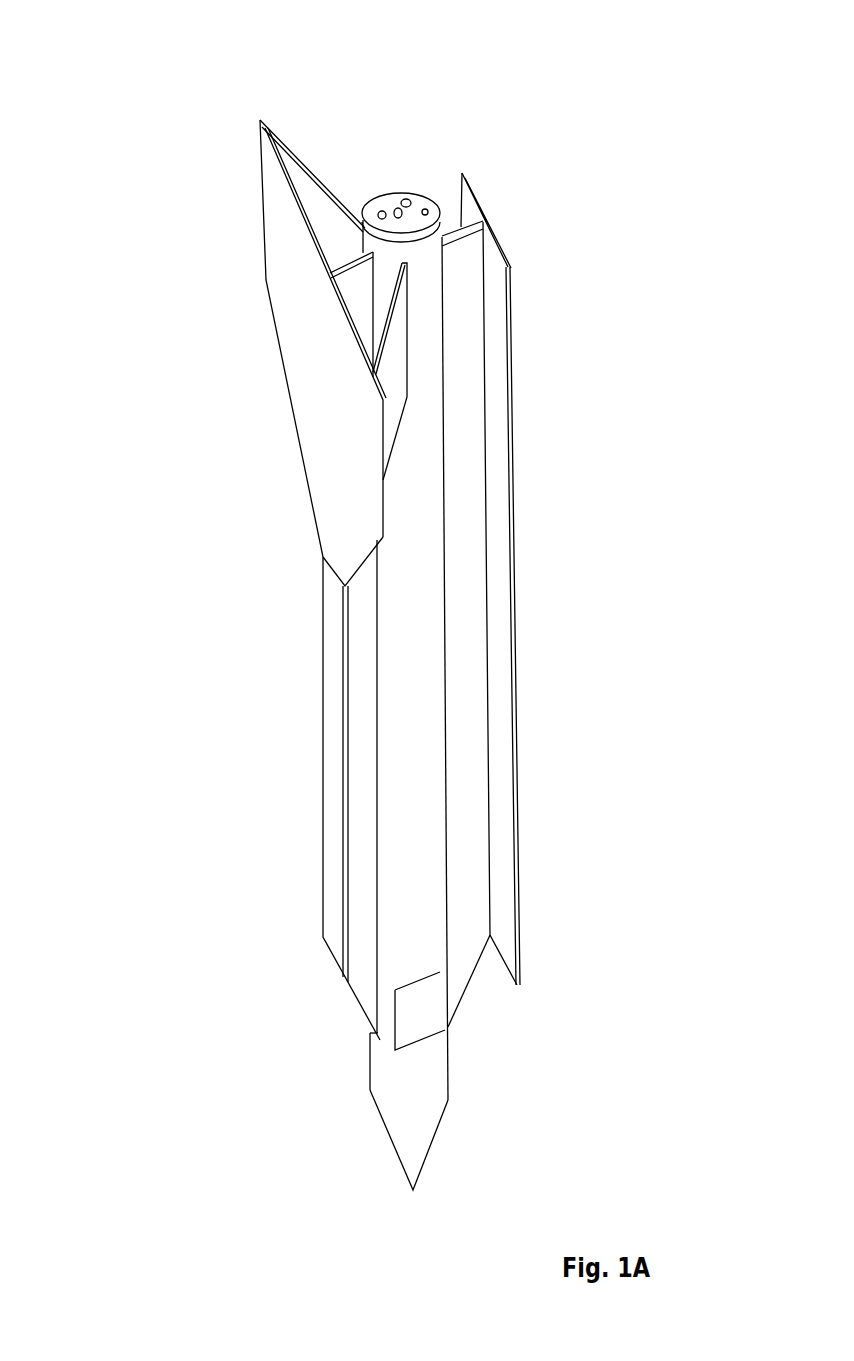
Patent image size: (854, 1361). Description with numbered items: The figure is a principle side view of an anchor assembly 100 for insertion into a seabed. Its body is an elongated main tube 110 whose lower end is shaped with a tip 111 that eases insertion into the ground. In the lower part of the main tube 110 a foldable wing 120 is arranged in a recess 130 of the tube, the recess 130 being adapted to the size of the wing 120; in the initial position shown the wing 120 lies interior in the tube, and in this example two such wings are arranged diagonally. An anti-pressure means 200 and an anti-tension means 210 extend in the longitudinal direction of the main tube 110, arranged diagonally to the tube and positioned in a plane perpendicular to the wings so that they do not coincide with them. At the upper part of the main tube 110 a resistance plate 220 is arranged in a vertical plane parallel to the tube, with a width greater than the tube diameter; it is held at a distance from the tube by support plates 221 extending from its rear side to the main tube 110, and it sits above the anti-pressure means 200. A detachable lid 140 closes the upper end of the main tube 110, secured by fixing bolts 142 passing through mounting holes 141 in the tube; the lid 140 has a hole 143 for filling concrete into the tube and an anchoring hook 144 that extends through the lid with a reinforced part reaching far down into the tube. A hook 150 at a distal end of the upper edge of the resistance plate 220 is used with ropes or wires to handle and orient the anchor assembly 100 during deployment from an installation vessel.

The anchor assembly 100 is at (190, 140).
The elongated main tube 110 is at (432, 670).
The tip 111 is at (425, 1110).
The foldable wing 120 is at (415, 1002).
The recess 130 is at (443, 987).
The detachable lid 140 is at (430, 195).
The mounting hole 141 is at (403, 233).
The fixing bolt 142 is at (443, 222).
The hole 143 is at (380, 212).
The anchoring hook 144 is at (407, 195).
The hook 150 is at (270, 133).
The anti-pressure means 200 is at (315, 715).
The anti-tension means 210 is at (520, 562).
The resistance plate 220 is at (297, 340).
The support plate 221 is at (327, 198).